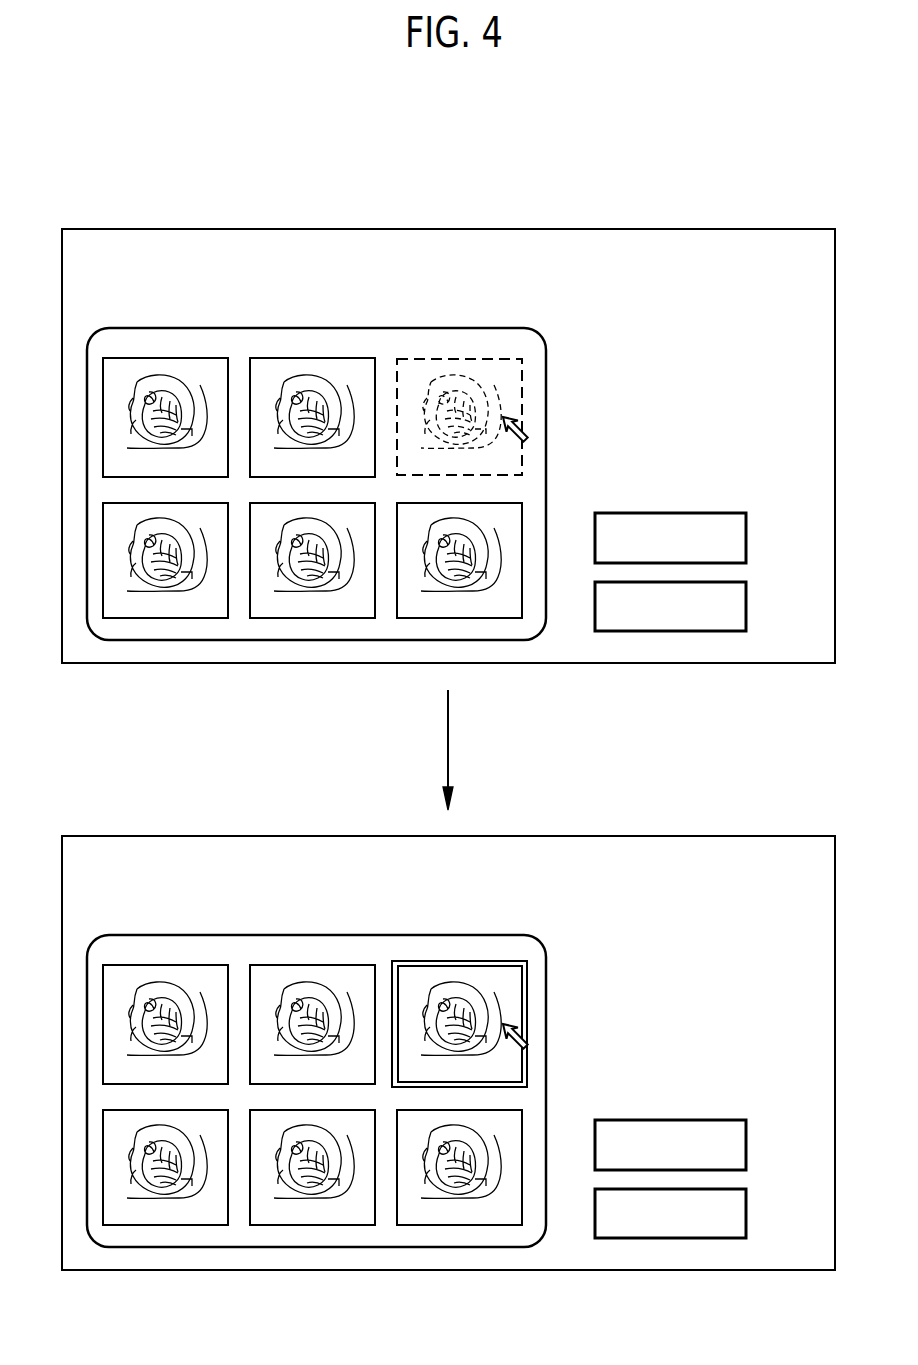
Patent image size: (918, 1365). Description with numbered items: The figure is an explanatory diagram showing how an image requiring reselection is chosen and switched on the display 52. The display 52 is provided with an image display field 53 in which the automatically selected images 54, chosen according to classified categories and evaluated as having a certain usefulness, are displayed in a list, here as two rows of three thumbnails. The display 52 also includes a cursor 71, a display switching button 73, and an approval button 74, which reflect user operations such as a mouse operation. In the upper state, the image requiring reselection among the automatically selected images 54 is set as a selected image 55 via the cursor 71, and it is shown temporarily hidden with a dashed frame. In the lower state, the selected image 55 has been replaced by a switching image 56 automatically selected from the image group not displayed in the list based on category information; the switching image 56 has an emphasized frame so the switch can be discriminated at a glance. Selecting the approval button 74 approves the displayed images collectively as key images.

The display 52 is at (85, 665).
The image display field 53 is at (166, 327).
The automatically selected images 54 is at (315, 358).
The selected image 55 is at (460, 358).
The switching image 56 is at (460, 965).
The cursor 71 is at (527, 440).
The display switching button 73 is at (748, 538).
The approval button 74 is at (748, 606).